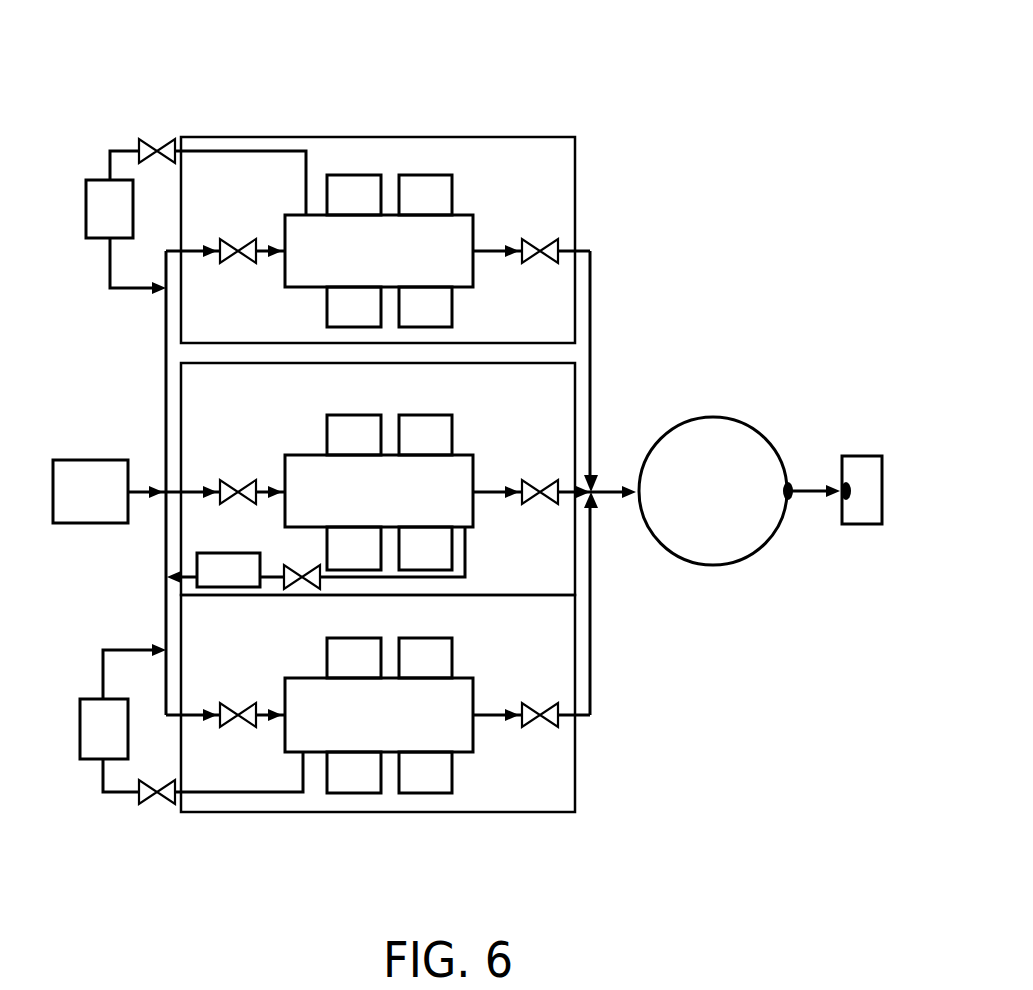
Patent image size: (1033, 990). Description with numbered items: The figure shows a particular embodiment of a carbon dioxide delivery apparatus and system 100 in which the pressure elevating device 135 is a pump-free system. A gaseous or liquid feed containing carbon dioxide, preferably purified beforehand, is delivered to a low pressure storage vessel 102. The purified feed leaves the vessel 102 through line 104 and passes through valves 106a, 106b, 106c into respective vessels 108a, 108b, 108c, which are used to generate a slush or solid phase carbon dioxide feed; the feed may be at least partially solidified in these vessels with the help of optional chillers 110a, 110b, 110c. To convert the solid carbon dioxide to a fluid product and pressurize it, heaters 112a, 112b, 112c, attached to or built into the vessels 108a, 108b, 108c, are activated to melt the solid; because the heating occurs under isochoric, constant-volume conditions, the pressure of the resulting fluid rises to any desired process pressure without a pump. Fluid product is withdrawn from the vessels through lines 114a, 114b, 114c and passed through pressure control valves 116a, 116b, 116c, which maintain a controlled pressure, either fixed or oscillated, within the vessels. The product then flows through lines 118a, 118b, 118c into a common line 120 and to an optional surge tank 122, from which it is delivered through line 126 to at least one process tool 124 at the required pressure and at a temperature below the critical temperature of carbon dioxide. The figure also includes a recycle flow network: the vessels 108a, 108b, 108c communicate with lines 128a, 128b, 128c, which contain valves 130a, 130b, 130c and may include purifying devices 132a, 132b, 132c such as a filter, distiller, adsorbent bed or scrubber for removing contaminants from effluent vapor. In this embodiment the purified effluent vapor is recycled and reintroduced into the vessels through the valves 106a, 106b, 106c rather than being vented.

The apparatus and system 100 is at (461, 445).
The low pressure storage vessel 102 is at (73, 525).
The line 104 is at (135, 490).
The valve 106a is at (242, 718).
The valve 106b is at (232, 497).
The valve 106c is at (240, 258).
The vessel 108a is at (288, 680).
The vessel 108b is at (288, 455).
The vessel 108c is at (288, 215).
The chiller 110a is at (327, 650).
The chiller 110b is at (351, 415).
The chiller 110c is at (355, 175).
The heater 112a is at (445, 781).
The heater 112b is at (440, 427).
The heater 112c is at (440, 197).
The line 114a is at (487, 713).
The line 114b is at (490, 490).
The line 114c is at (490, 251).
The pressure control valve 116a is at (537, 720).
The pressure control valve 116b is at (546, 497).
The pressure control valve 116c is at (542, 260).
The line 118a is at (590, 672).
The line 118b is at (570, 450).
The line 118c is at (592, 318).
The line 120 is at (610, 493).
The surge tank 122 is at (726, 565).
The process tool 124 is at (859, 524).
The line 126 is at (812, 487).
The line 128a is at (103, 780).
The line 128b is at (463, 553).
The line 128c is at (108, 170).
The valve 130a is at (157, 795).
The valve 130b is at (307, 585).
The valve 130c is at (165, 151).
The purifying device 132a is at (80, 727).
The purifying device 132b is at (215, 553).
The purifying device 132c is at (97, 240).
The pressure elevating device 135 is at (440, 150).